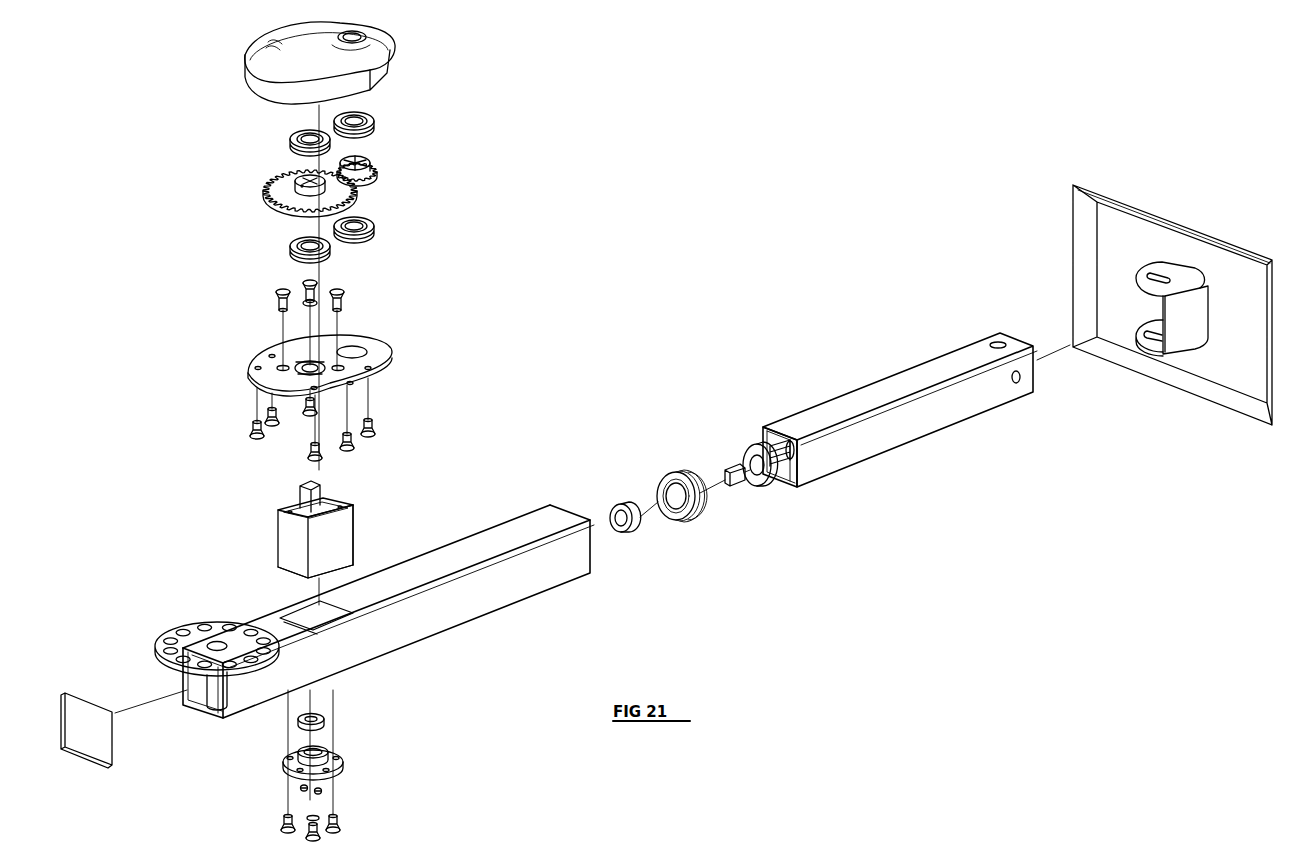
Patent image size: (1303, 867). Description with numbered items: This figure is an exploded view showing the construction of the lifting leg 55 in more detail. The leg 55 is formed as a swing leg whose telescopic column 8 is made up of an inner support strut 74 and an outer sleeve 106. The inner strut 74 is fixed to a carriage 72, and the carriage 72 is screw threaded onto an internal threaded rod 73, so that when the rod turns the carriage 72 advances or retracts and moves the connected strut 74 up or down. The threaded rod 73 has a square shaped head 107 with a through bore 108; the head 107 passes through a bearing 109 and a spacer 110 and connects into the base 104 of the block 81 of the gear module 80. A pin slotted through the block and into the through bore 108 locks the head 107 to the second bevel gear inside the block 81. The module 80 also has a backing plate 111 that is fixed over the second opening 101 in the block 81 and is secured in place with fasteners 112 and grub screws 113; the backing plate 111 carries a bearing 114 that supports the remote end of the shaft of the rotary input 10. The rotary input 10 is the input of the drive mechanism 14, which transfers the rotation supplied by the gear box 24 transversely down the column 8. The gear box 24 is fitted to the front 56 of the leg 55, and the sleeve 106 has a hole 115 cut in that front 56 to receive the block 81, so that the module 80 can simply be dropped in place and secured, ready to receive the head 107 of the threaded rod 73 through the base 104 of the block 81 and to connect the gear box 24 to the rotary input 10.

The telescopic column 8 is at (388, 581).
The rotary input 10 is at (300, 487).
The drive mechanism 14 is at (353, 558).
The gear box 24 is at (453, 53).
The lifting leg 55 is at (508, 520).
The front of the leg 56 is at (374, 591).
The carriage 72 is at (770, 425).
The threaded rod 73 is at (787, 470).
The inner support strut 74 is at (891, 407).
The gear module 80 is at (303, 535).
The block 81 is at (277, 512).
The second opening 101 is at (297, 573).
The base of the block 104 is at (353, 517).
The outer sleeve 106 is at (420, 555).
The square shaped head 107 is at (725, 465).
The through bore 108 is at (742, 463).
The bearing 109 is at (660, 477).
The spacer 110 is at (612, 503).
The backing plate 111 is at (281, 767).
The fasteners 112 is at (283, 828).
The grub screws 113 is at (298, 788).
The bearing 114 is at (300, 720).
The hole 115 is at (315, 617).